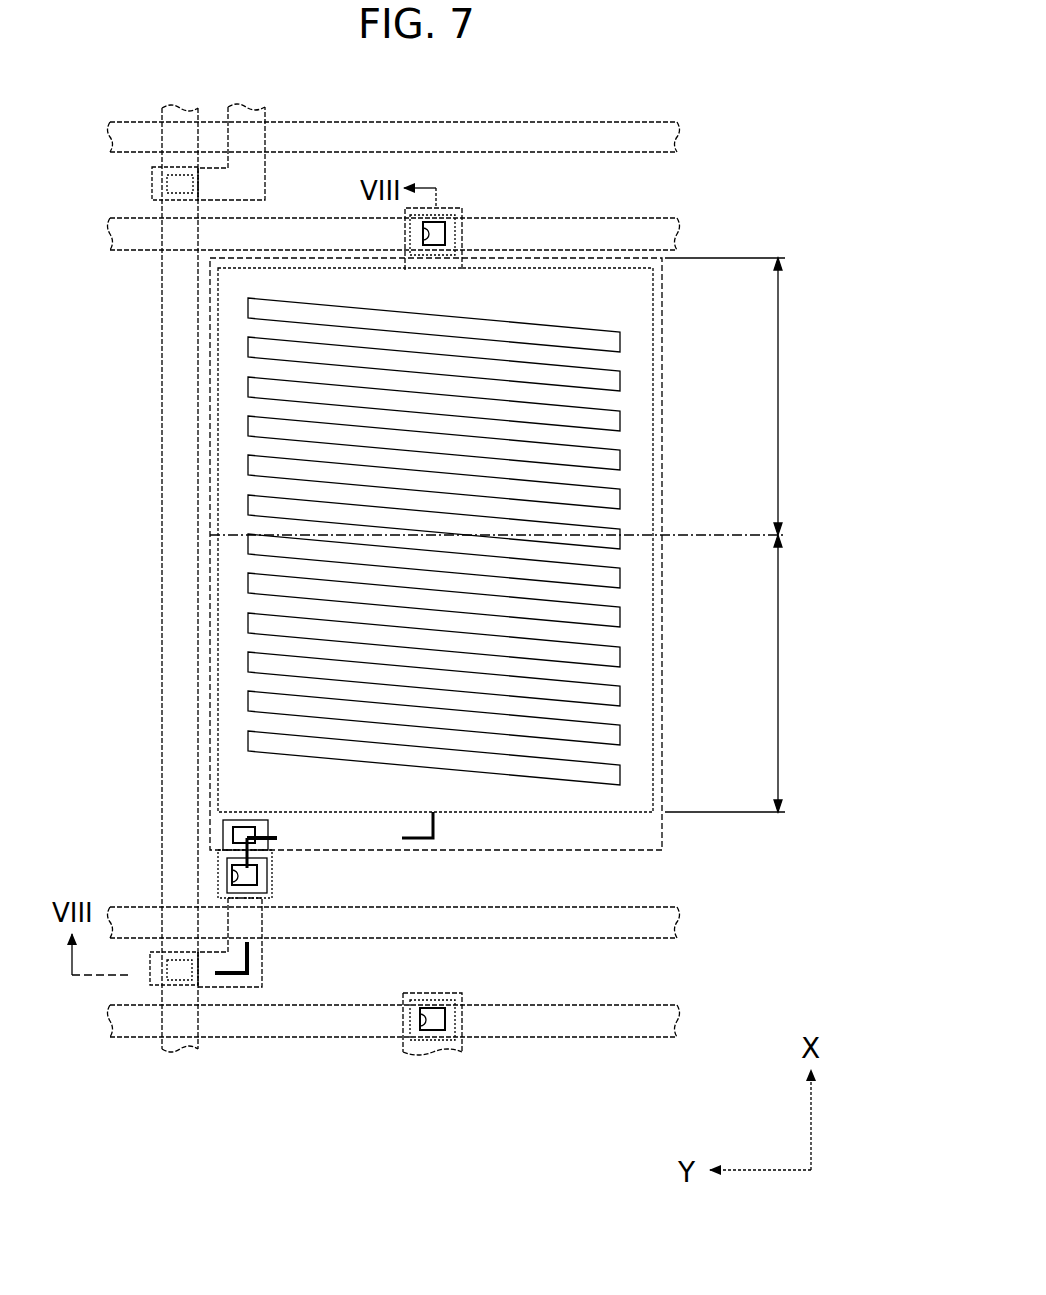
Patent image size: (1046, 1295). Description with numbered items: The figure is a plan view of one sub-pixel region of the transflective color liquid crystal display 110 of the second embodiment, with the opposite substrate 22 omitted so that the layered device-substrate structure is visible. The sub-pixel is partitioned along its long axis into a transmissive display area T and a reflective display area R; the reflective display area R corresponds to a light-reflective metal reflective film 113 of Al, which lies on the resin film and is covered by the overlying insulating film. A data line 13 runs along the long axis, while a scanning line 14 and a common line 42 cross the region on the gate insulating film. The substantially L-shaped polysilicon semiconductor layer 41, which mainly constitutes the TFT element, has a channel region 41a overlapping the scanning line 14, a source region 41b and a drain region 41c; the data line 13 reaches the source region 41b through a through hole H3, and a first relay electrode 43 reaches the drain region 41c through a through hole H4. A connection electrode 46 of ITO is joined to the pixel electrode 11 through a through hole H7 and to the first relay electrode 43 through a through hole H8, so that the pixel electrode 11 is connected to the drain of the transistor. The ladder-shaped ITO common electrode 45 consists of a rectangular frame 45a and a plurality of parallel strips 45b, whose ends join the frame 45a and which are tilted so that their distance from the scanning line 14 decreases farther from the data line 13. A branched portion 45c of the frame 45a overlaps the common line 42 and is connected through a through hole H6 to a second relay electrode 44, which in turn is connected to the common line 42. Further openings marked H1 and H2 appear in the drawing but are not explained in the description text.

The liquid crystal display 110 is at (684, 86).
The data line 13 is at (165, 735).
The scanning line 14 is at (680, 137).
The common line 42 is at (680, 229).
The pixel electrode 11 is at (640, 832).
The reflective film 113 is at (645, 750).
The common electrode 45 is at (516, 646).
The frame 45a is at (593, 313).
The strips 45b is at (577, 435).
The branched portion 45c is at (464, 232).
The second relay electrode 44 is at (445, 210).
The contact hole H2 is at (447, 222).
The through hole H6 is at (425, 233).
The semiconductor layer 41 is at (285, 175).
The channel region 41a is at (252, 893).
The source region 41b is at (190, 981).
The drain region 41c is at (262, 893).
The through hole H3 is at (152, 184).
The connection electrode 46 is at (228, 828).
The through hole H7 is at (250, 832).
The through hole H8 is at (230, 871).
The through hole H4 is at (247, 875).
The contact hole H1 is at (262, 873).
The first relay electrode 43 is at (256, 893).
The opposite substrate 22 is at (285, 968).
The transmissive display area T is at (735, 396).
The reflective display area R is at (508, 673).